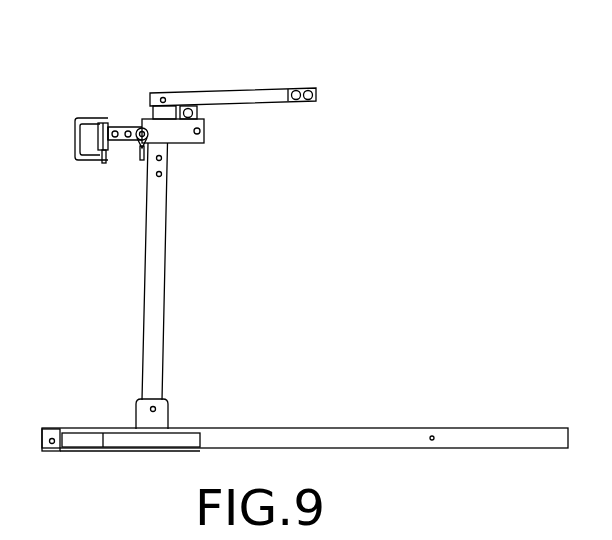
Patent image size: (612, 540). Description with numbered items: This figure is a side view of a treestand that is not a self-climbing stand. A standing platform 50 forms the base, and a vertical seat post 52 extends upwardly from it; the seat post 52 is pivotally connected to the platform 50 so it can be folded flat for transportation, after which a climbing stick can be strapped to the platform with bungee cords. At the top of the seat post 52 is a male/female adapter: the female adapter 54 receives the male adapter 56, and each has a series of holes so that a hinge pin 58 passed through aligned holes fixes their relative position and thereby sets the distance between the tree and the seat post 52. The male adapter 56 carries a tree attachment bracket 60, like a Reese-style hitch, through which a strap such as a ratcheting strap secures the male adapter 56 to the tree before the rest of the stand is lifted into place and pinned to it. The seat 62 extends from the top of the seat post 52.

The standing platform 50 is at (488, 428).
The vertical seat post 52 is at (156, 246).
The female adapter 54 is at (205, 131).
The male adapter 56 is at (121, 145).
The hinge pin 58 is at (138, 128).
The tree attachment bracket 60 is at (100, 117).
The seat 62 is at (266, 88).